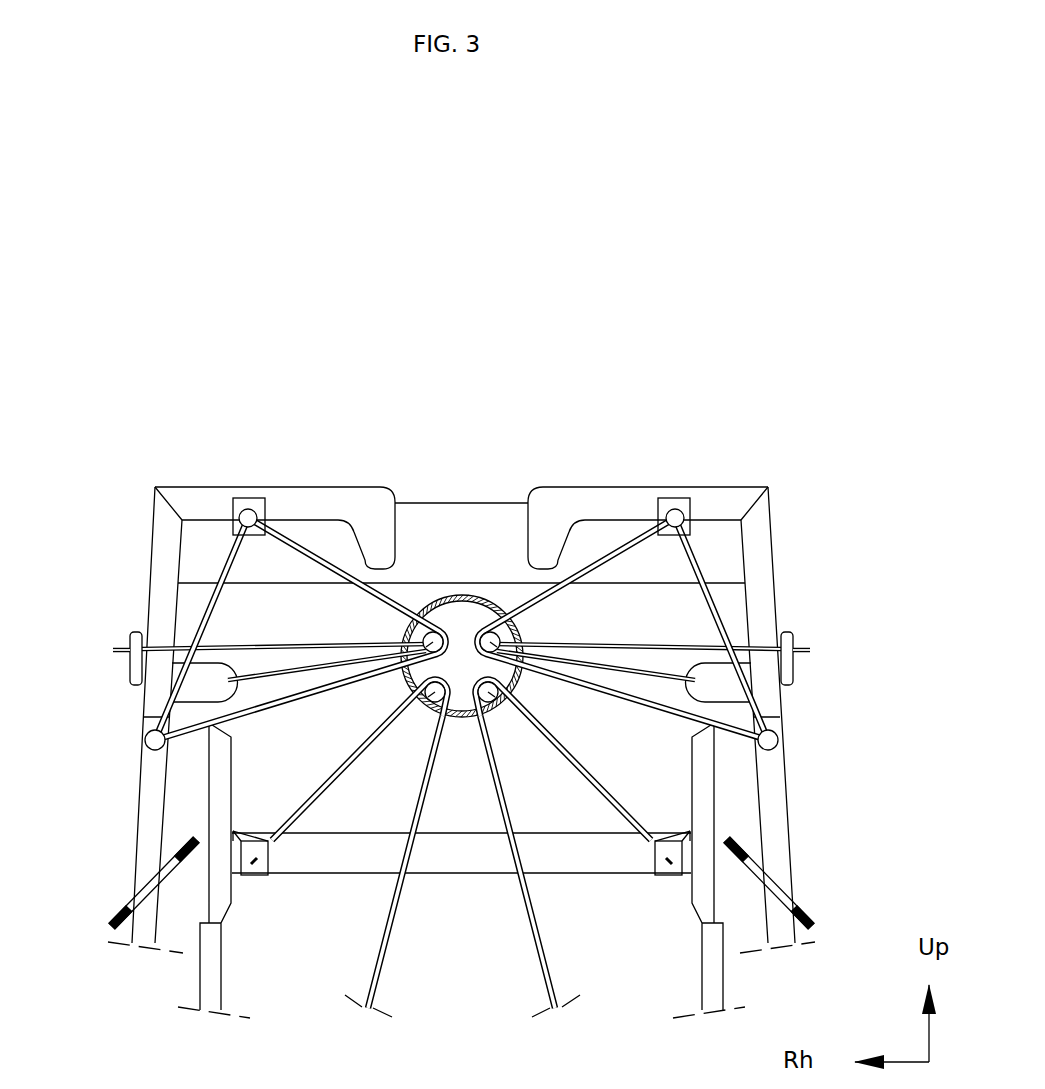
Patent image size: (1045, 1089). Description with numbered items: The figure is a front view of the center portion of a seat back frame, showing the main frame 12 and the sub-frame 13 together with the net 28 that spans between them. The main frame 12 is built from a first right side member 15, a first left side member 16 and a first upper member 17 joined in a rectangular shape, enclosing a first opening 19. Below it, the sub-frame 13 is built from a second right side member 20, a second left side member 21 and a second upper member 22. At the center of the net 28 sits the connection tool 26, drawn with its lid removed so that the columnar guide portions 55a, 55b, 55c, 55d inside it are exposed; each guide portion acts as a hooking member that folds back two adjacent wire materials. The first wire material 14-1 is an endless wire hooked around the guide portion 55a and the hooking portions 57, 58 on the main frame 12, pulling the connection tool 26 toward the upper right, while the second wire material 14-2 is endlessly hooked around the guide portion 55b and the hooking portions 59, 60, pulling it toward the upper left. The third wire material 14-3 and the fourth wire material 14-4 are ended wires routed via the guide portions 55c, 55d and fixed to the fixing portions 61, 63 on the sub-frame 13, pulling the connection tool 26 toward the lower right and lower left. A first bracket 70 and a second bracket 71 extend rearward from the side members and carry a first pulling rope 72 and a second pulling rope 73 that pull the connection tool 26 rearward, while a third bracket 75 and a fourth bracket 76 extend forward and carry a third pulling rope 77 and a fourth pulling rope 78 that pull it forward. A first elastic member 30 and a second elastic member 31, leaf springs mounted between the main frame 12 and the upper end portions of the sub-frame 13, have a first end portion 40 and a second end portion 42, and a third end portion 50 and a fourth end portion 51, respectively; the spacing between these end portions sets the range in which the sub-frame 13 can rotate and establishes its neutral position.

The main frame 12 is at (162, 560).
The sub-frame 13 is at (200, 990).
The first wire material 14-1 is at (337, 557).
The second wire material 14-2 is at (600, 552).
The third wire material 14-3 is at (296, 814).
The fourth wire material 14-4 is at (604, 790).
The first right side member 15 is at (167, 522).
The first left side member 16 is at (762, 566).
The first upper member 17 is at (465, 500).
The first opening 19 is at (182, 926).
The second right side member 20 is at (212, 968).
The second left side member 21 is at (711, 968).
The second upper member 22 is at (338, 856).
The connection tool 26 is at (457, 597).
The net 28 is at (407, 905).
The first elastic member 30 is at (760, 866).
The second elastic member 31 is at (165, 858).
The first end portion 40 is at (810, 915).
The second end portion 42 is at (745, 840).
The third end portion 50 is at (120, 912).
The fourth end portion 51 is at (182, 841).
The guide portion 55a is at (425, 640).
The guide portion 55b is at (500, 640).
The guide portion 55c is at (431, 702).
The guide portion 55d is at (492, 702).
The hooking portion 57 is at (241, 512).
The hooking portion 58 is at (147, 742).
The hooking portion 59 is at (681, 512).
The hooking portion 60 is at (777, 742).
The fixing portion 61 is at (258, 880).
The fixing portion 63 is at (665, 880).
The first bracket 70 is at (243, 692).
The second bracket 71 is at (690, 690).
The first pulling rope 72 is at (321, 670).
The second pulling rope 73 is at (601, 668).
The third bracket 75 is at (136, 632).
The fourth bracket 76 is at (795, 634).
The third pulling rope 77 is at (233, 645).
The fourth pulling rope 78 is at (692, 647).